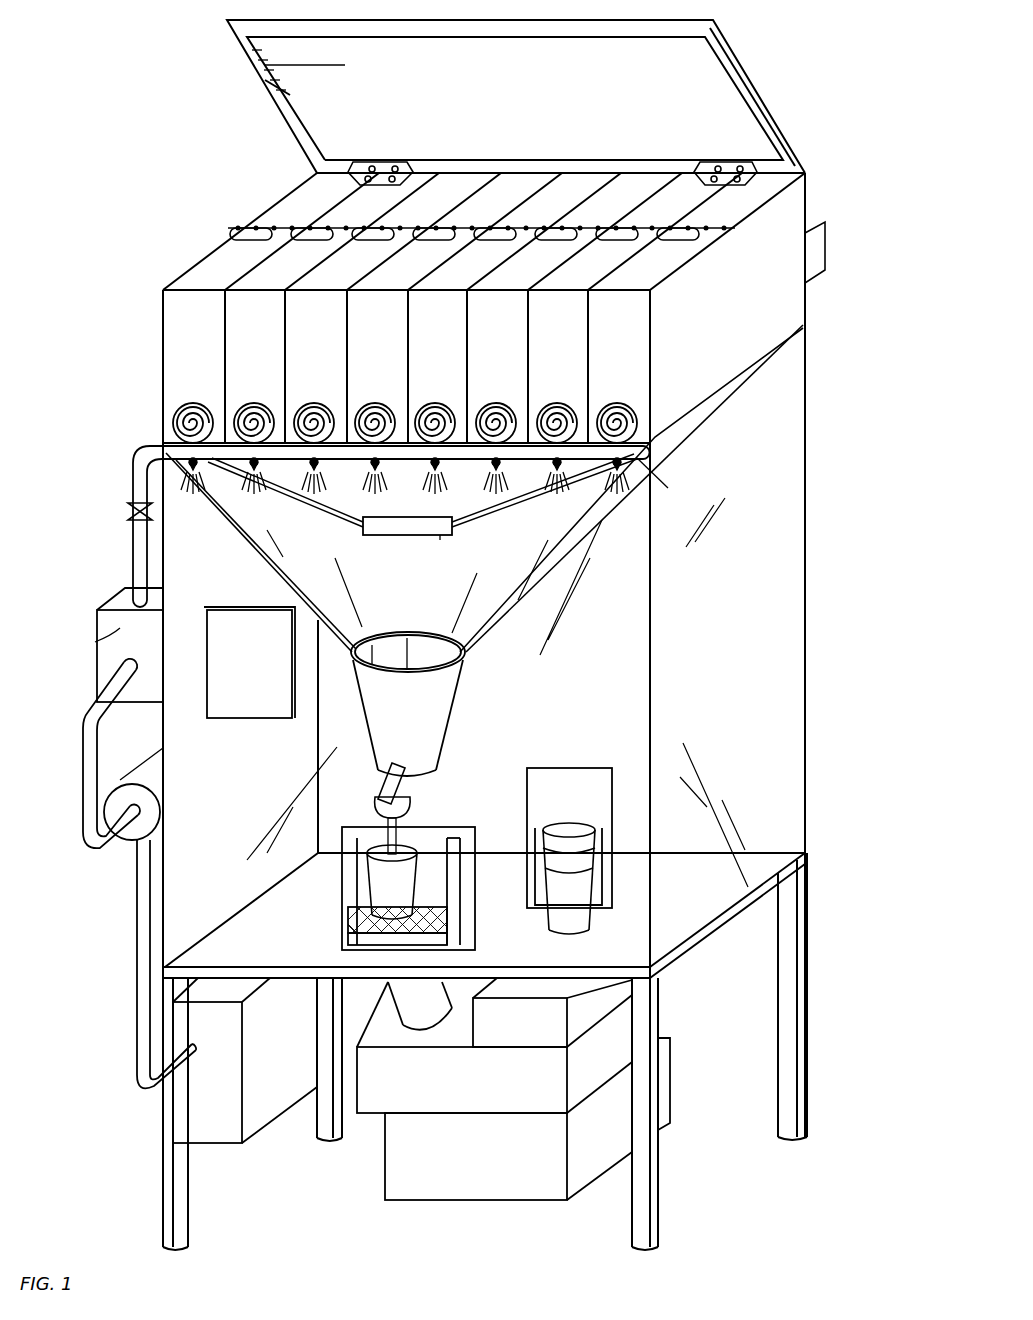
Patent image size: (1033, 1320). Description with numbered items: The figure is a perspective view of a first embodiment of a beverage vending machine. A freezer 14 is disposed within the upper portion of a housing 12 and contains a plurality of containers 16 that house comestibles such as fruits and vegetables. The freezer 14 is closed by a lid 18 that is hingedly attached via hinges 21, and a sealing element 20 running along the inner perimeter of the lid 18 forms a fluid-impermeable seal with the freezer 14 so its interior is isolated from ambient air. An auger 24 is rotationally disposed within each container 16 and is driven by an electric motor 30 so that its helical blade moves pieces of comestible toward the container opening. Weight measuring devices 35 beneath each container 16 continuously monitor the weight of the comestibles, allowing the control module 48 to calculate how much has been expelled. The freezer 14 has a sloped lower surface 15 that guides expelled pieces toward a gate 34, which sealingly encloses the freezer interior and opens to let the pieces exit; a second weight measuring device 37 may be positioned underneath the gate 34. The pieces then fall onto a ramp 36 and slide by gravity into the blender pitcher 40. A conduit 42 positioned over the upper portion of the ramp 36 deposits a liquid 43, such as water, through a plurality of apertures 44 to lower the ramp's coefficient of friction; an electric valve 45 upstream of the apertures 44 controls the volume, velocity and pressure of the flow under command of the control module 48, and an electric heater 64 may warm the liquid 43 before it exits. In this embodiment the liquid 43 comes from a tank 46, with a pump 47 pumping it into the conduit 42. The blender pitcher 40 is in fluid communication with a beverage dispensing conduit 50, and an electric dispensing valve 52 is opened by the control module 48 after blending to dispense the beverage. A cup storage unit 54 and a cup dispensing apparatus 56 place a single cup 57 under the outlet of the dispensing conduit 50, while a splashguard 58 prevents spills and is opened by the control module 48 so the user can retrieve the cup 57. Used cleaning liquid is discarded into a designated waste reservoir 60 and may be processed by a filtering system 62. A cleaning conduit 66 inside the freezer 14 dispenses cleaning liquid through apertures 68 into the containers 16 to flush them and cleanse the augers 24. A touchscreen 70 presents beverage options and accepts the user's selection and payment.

The housing 12 is at (785, 572).
The freezer 14 is at (752, 313).
The sloped lower surface 15 is at (505, 508).
The containers 16 is at (690, 205).
The lid 18 is at (735, 100).
The sealing element 20 is at (282, 103).
The hinges 21 is at (395, 163).
The auger 24 is at (170, 412).
The electric motor 30 is at (825, 255).
The gate 34 is at (402, 530).
The weight measuring devices 35 is at (704, 422).
The ramp 36 is at (282, 590).
The second weight measuring device 37 is at (446, 540).
The blender pitcher 40 is at (447, 719).
The conduit 42 is at (435, 466).
The liquid 43 is at (650, 478).
The apertures 44 is at (500, 468).
The electric valve 45 is at (128, 508).
The tank 46 is at (175, 1100).
The pump 47 is at (95, 802).
The control module 48 is at (395, 1150).
The beverage dispensing conduit 50 is at (412, 768).
The electric dispensing valve 52 is at (418, 803).
The cup storage unit 54 is at (595, 880).
The cup dispensing apparatus 56 is at (570, 766).
The cup 57 is at (372, 895).
The splashguard 58 is at (470, 928).
The waste reservoir 60 is at (583, 1078).
The filtering system 62 is at (595, 1004).
The electric heater 64 is at (97, 635).
The cleaning conduit 66 is at (222, 235).
The apertures 68 is at (262, 222).
The touchscreen 70 is at (249, 662).